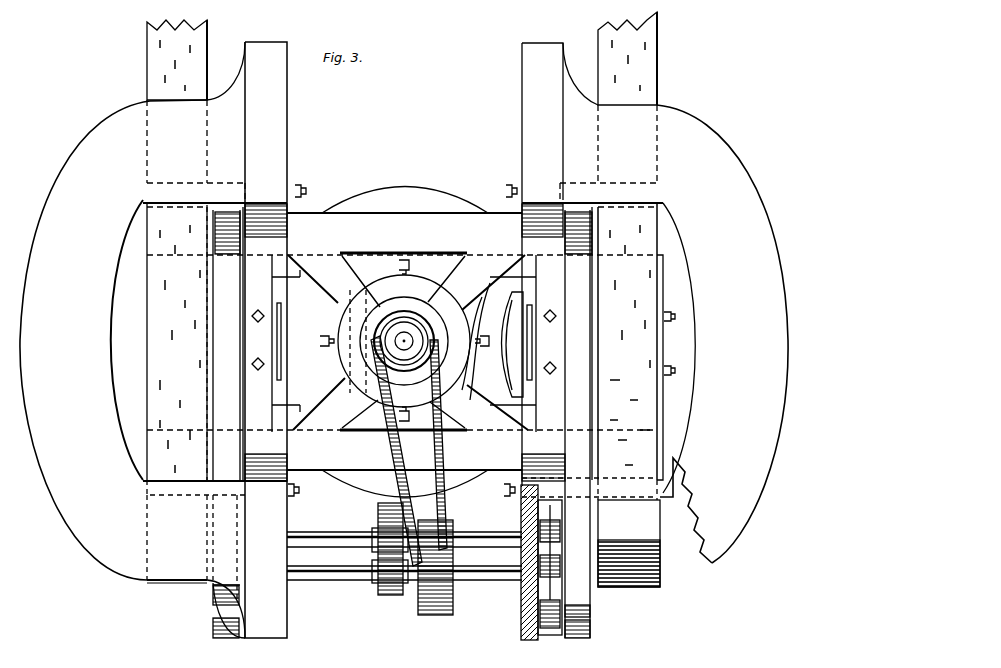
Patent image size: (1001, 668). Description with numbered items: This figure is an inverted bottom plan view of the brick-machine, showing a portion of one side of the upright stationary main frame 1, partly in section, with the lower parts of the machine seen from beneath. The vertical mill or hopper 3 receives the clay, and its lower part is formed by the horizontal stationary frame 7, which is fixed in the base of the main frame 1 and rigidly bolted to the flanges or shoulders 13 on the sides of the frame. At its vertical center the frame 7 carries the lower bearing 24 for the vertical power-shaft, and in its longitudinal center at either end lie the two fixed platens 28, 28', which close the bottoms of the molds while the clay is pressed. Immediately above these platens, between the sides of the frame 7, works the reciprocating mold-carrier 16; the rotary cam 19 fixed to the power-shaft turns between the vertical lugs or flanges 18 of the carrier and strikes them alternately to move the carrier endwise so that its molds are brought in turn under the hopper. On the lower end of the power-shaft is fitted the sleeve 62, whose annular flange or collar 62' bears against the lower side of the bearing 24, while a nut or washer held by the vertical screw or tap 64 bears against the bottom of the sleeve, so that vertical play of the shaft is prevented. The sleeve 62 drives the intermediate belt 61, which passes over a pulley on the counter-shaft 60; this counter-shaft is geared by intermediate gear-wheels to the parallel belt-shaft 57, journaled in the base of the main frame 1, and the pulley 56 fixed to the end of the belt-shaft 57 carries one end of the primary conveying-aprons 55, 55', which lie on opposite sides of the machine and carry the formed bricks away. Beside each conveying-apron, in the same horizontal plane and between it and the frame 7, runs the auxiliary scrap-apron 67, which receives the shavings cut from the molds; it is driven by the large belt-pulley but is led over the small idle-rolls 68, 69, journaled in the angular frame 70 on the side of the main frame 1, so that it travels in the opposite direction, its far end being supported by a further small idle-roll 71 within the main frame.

The main frame 1 is at (404, 296).
The hopper 3 is at (407, 192).
The horizontal stationary frame 7 is at (402, 340).
The flanges 13 is at (405, 342).
The mold-carrier 16 is at (306, 342).
The flanges 18 is at (510, 388).
The rotary cam 19 is at (480, 341).
The bearing 24 is at (404, 340).
The platen 28 is at (288, 341).
The platen 28' is at (544, 342).
The conveying-apron 55 is at (396, 260).
The conveying-apron 55' is at (636, 341).
The pulley 56 is at (147, 583).
The belt-shaft 57 is at (477, 541).
The counter-shaft 60 is at (350, 578).
The belt 61 is at (437, 503).
The sleeve 62 is at (428, 318).
The annular flange 62' is at (378, 316).
The screw 64 is at (408, 328).
The scrap-apron 67 is at (590, 648).
The idle-roll 68 is at (213, 630).
The idle-roll 69 is at (213, 607).
The angular frame 70 is at (552, 635).
The idle-roll 71 is at (215, 226).